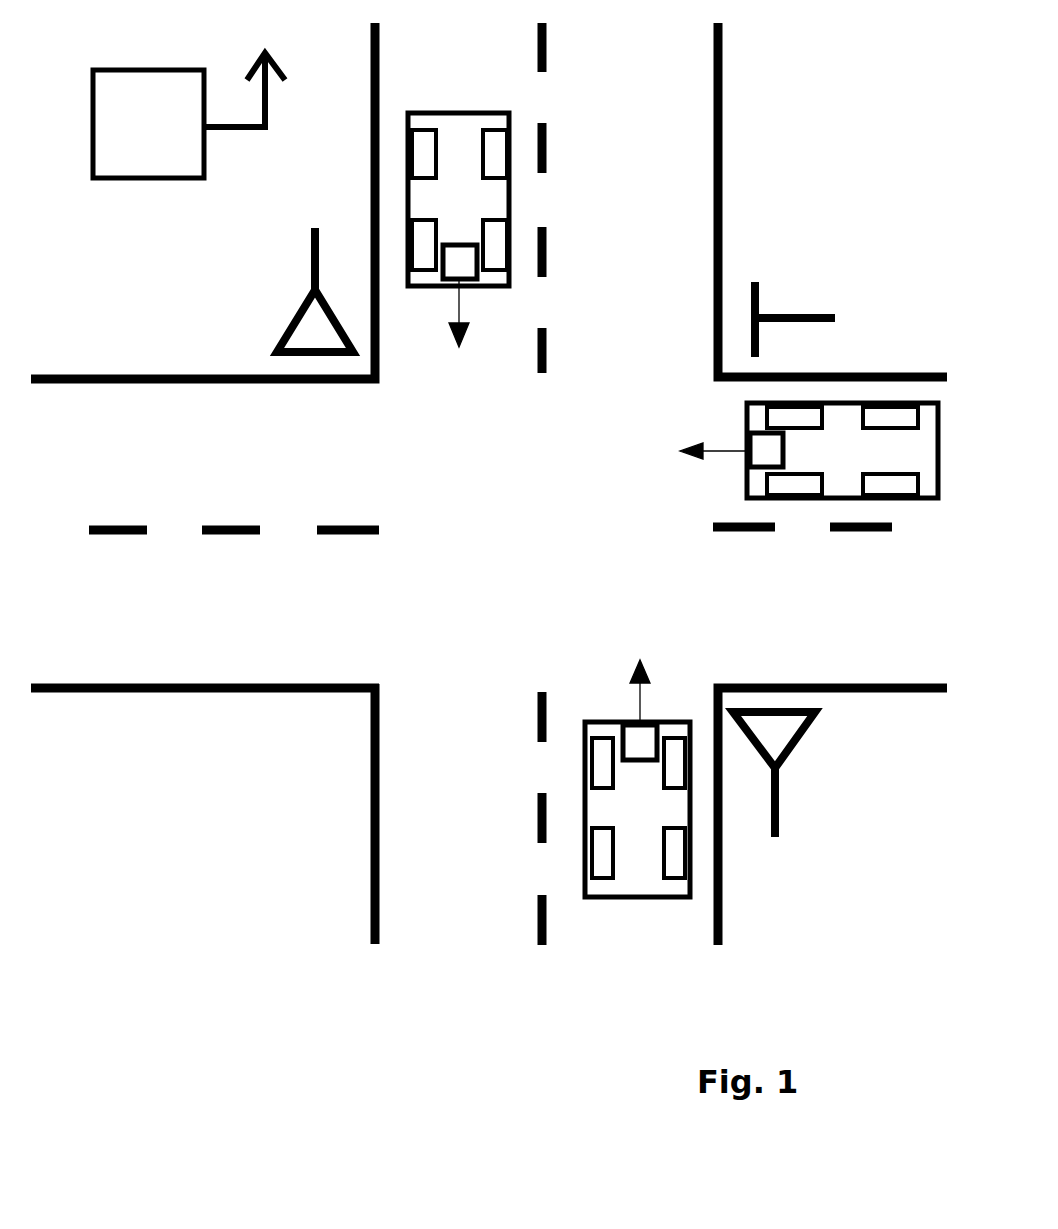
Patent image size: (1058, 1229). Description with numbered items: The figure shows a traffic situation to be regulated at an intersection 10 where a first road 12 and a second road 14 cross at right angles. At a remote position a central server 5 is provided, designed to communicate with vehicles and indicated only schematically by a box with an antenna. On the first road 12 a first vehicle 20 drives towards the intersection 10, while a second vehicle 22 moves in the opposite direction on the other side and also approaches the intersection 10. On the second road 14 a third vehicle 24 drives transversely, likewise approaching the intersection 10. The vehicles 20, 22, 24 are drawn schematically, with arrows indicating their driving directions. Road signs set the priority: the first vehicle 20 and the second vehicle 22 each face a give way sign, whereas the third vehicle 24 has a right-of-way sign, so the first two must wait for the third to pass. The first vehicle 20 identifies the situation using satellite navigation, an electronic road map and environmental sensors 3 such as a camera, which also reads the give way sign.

The environmental sensors 3 is at (613, 502).
The central server 5 is at (189, 115).
The intersection 10 is at (298, 744).
The first road 12 is at (404, 864).
The second road 14 is at (186, 644).
The first vehicle 20 is at (637, 809).
The second vehicle 22 is at (458, 199).
The third vehicle 24 is at (842, 450).